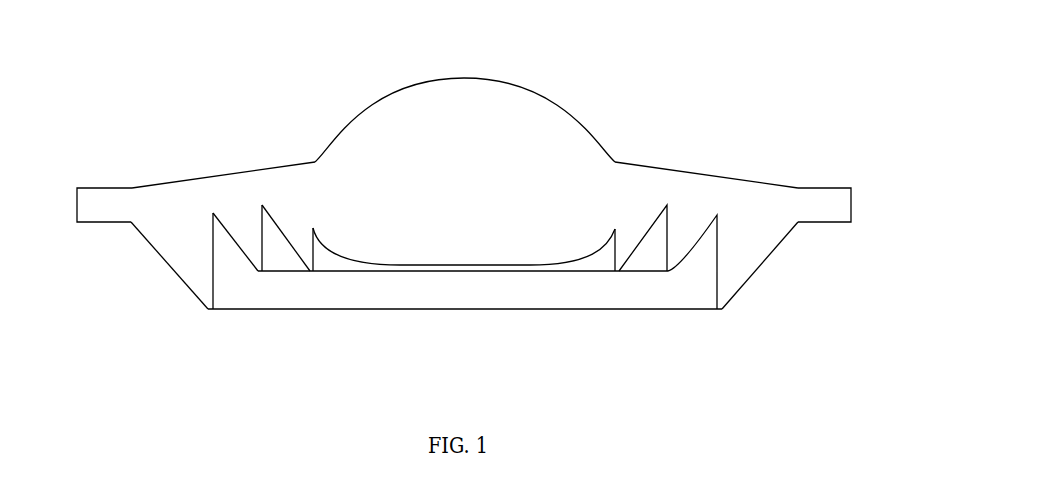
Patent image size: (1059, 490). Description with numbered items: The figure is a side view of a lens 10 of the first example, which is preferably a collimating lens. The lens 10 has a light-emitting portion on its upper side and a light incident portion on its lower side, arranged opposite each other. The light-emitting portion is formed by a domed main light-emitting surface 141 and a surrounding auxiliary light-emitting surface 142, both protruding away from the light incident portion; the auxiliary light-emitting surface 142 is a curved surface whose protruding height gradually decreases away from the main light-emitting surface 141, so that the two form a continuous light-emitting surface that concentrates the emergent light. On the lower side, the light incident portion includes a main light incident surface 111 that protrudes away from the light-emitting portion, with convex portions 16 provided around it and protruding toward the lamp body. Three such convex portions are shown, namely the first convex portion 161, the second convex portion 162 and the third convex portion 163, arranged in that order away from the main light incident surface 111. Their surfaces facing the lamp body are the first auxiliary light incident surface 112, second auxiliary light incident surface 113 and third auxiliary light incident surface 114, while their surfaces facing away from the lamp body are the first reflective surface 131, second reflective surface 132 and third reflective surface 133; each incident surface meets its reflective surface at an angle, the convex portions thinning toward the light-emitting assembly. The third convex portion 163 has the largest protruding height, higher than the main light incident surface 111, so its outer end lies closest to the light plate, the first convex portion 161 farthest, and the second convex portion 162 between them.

The lens 10 is at (475, 188).
The main light-emitting surface 141 is at (462, 78).
The auxiliary light-emitting surface 142 is at (214, 173).
The third reflective surface 133 is at (165, 262).
The second reflective surface 132 is at (232, 235).
The first reflective surface 131 is at (288, 250).
The third auxiliary light incident surface 114 is at (210, 285).
The second auxiliary light incident surface 113 is at (265, 238).
The first auxiliary light incident surface 112 is at (315, 262).
The main light incident surface 111 is at (463, 265).
The convex portion 16 is at (730, 298).
The first convex portion 161 is at (627, 232).
The second convex portion 162 is at (680, 237).
The third convex portion 163 is at (756, 250).